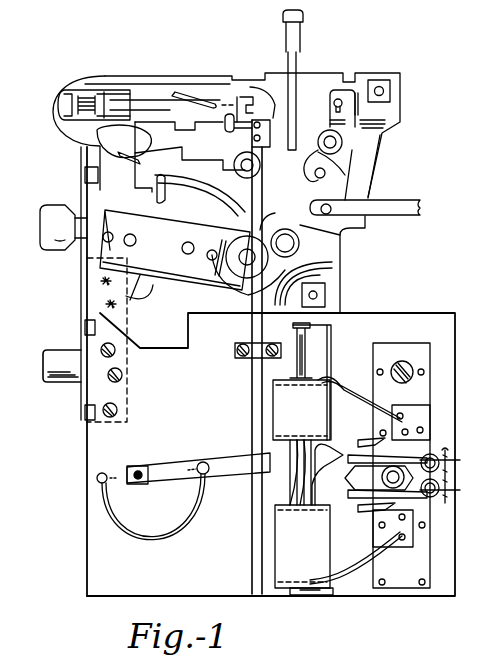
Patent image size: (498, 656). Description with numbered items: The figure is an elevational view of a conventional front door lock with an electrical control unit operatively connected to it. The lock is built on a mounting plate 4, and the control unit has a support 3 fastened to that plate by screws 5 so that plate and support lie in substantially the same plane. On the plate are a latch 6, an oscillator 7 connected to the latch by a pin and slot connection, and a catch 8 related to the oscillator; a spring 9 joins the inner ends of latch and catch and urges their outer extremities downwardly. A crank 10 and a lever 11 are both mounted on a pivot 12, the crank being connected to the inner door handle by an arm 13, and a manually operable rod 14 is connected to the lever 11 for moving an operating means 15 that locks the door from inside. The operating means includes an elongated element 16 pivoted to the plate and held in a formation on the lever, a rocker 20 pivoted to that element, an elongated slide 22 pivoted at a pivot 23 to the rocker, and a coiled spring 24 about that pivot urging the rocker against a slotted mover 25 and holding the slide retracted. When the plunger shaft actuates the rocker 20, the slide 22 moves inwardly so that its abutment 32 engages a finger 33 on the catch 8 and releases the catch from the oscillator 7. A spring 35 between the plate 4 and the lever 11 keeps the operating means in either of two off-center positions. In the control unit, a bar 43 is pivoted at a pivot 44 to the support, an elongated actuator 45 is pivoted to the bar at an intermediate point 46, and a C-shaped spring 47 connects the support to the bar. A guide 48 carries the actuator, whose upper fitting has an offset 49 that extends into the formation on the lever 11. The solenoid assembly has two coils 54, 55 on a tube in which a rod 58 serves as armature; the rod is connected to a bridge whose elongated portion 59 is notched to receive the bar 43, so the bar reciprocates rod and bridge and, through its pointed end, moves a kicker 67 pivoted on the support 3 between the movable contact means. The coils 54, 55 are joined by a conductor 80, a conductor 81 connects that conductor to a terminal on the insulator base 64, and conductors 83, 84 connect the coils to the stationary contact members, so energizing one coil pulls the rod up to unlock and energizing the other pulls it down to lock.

The support 3 is at (415, 318).
The mounting plate 4 is at (91, 293).
The screws 5 is at (115, 410).
The latch 6 is at (44, 214).
The oscillator 7 is at (155, 295).
The catch 8 is at (190, 170).
The spring 9 is at (300, 247).
The crank 10 is at (355, 182).
The lever 11 is at (345, 128).
The pivot 12 is at (340, 145).
The arm 13 is at (388, 210).
The rod 14 is at (300, 52).
The operating means 15 is at (88, 190).
The elongated element 16 is at (183, 100).
The rocker 20 is at (68, 122).
The slide 22 is at (185, 100).
The pivot 23 is at (80, 130).
The coiled spring 24 is at (75, 114).
The slotted mover 25 is at (62, 96).
The abutment 32 is at (233, 92).
The finger 33 is at (243, 90).
The spring 35 is at (320, 93).
The bar 43 is at (216, 462).
The pivot 44 is at (137, 484).
The actuator 45 is at (251, 390).
The intermediate point 46 is at (250, 470).
The C-shaped spring 47 is at (128, 540).
The guide 48 is at (240, 356).
The offset 49 is at (236, 162).
The coil 54 is at (301, 410).
The coil 55 is at (282, 550).
The rod 58 is at (305, 340).
The elongated portion 59 is at (333, 350).
The insulator base 64 is at (420, 362).
The kicker 67 is at (402, 475).
The conductor 80 is at (300, 472).
The conductor 81 is at (330, 420).
The conductor 83 is at (325, 380).
The conductor 84 is at (365, 568).